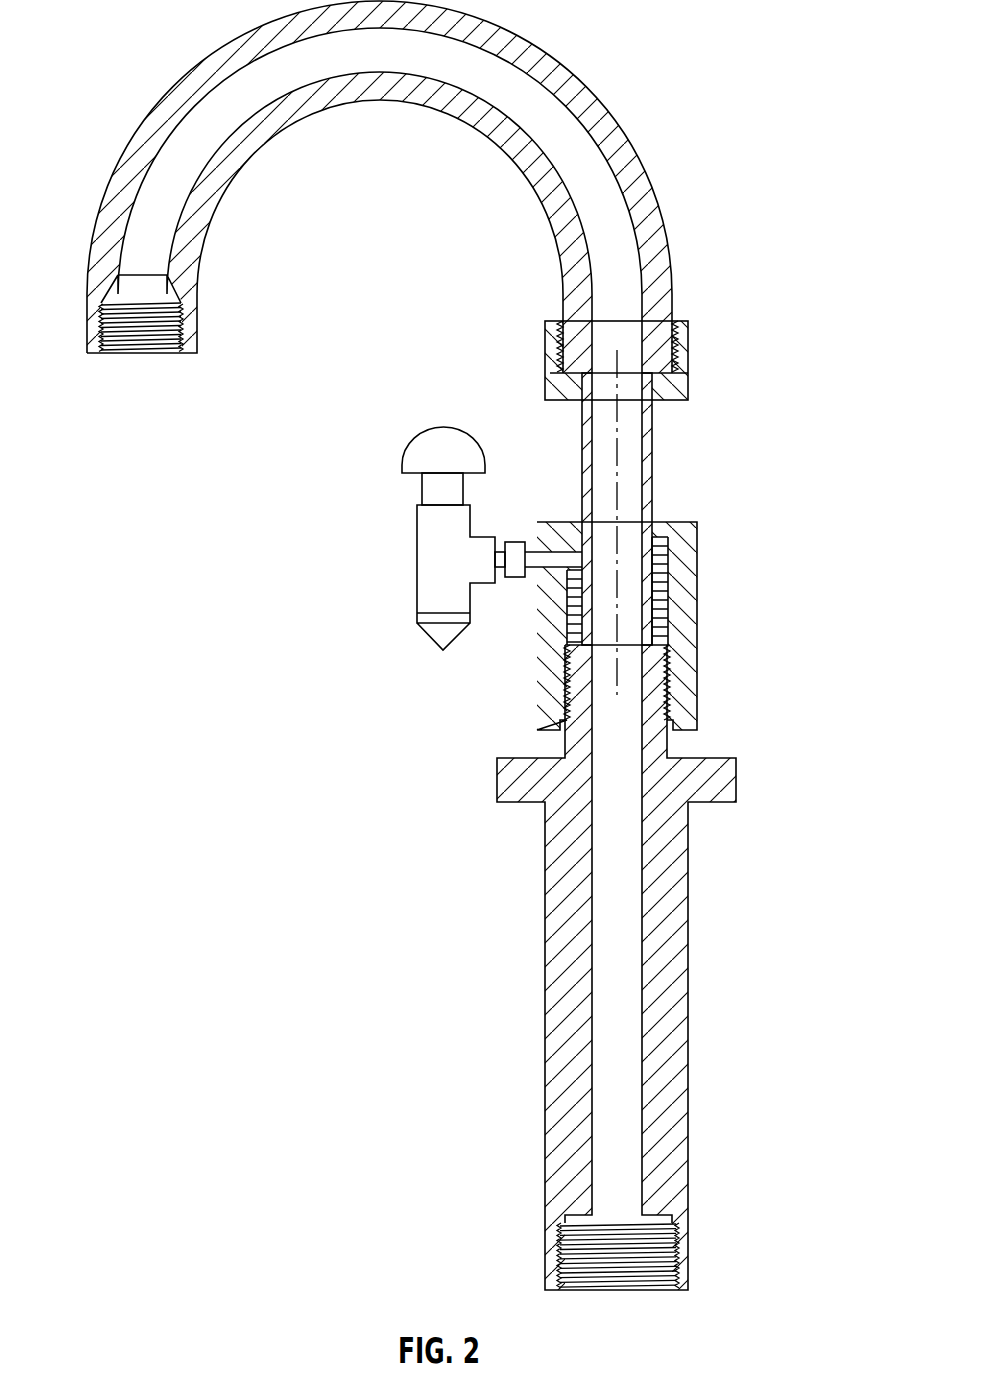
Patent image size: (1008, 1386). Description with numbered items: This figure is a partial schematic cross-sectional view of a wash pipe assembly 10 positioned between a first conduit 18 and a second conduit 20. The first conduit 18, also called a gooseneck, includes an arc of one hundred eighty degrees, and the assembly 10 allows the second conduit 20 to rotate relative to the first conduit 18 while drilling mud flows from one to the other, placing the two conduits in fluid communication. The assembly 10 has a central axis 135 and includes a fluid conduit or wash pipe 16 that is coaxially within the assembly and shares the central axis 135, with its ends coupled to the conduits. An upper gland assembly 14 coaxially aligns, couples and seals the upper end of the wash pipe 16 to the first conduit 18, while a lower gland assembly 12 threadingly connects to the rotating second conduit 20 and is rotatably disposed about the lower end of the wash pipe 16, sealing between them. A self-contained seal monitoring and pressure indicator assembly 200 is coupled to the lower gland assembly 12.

The wash pipe assembly 10 is at (763, 476).
The lower gland assembly 12 is at (726, 586).
The upper gland assembly 14 is at (728, 351).
The wash pipe 16 is at (582, 473).
The first conduit 18 is at (647, 172).
The second conduit 20 is at (688, 925).
The central axis 135 is at (618, 452).
The self-contained seal monitoring and pressure indicator assembly 200 is at (348, 604).